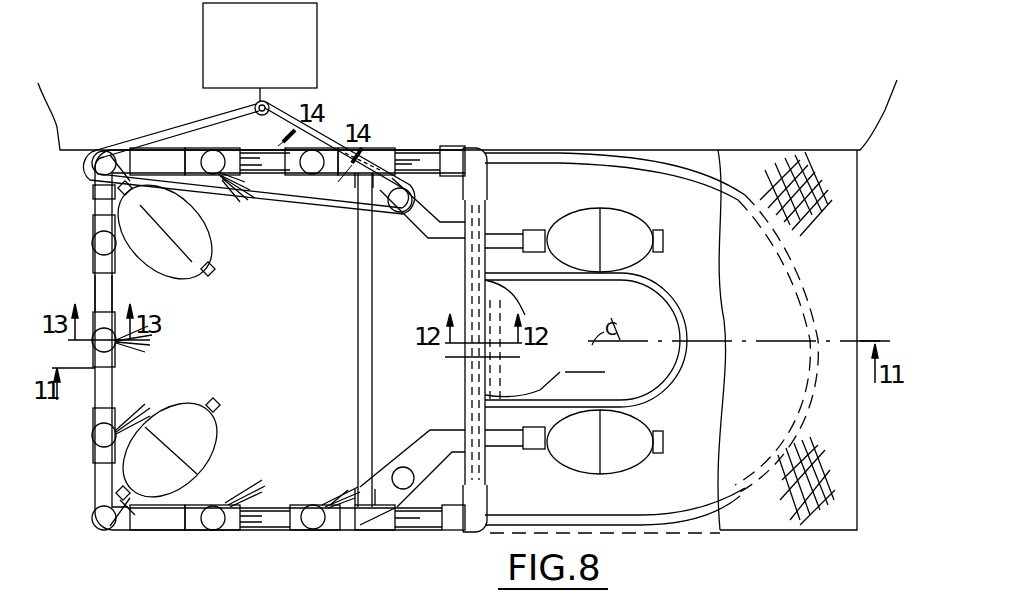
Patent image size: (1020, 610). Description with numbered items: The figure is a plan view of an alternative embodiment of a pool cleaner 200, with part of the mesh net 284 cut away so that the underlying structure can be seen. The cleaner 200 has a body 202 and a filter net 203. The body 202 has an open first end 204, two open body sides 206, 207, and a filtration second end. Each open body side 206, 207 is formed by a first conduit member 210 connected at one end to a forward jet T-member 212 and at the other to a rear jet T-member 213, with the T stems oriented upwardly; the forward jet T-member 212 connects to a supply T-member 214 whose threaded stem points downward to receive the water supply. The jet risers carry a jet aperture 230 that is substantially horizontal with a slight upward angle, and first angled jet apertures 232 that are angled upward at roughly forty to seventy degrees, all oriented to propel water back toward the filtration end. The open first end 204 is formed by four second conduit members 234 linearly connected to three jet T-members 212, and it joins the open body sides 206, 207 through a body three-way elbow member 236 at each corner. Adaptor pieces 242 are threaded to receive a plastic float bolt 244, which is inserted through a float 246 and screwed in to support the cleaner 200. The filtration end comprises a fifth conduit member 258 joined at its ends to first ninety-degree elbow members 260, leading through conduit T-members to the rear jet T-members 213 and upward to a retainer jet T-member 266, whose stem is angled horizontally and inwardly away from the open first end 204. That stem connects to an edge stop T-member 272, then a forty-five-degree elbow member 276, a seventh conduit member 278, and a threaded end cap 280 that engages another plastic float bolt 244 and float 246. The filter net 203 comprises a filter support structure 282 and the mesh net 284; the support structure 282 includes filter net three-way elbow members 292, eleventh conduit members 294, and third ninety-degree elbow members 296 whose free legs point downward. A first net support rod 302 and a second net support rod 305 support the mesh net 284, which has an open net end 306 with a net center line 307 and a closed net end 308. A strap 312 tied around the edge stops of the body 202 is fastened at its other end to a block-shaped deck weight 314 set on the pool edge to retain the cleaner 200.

The pool cleaner 200 is at (654, 44).
The body 202 is at (135, 561).
The filter net 203 is at (779, 565).
The open first end 204 is at (96, 290).
The open body side 206 is at (170, 152).
The open body side 207 is at (328, 505).
The first conduit member 210 is at (247, 157).
The forward jet T-member 212 is at (188, 150).
The rear jet T-member 213 is at (325, 155).
The supply T-member 214 is at (160, 522).
The jet aperture 230 is at (224, 178).
The first angled jet apertures 232 is at (333, 500).
The second conduit members 234 is at (96, 195).
The body three-way elbow member 236 is at (93, 180).
The adaptor pieces 242 is at (133, 522).
The plastic float bolt 244 is at (657, 230).
The float 246 is at (617, 217).
The fifth conduit member 258 is at (358, 300).
The first 90° elbow members 260 is at (347, 192).
The retainer jet T-member 266 is at (352, 526).
The edge stop T-member 272 is at (399, 529).
The 45° elbow member 276 is at (445, 240).
The seventh conduit member 278 is at (504, 232).
The threaded end cap 280 is at (544, 228).
The filter support structure 282 is at (492, 200).
The mesh net 284 is at (797, 158).
The filter net three-way elbow members 292 is at (450, 150).
The eleventh conduit members 294 is at (401, 156).
The third 90° elbow members 296 is at (382, 152).
The first net support rod 302 is at (688, 518).
The second net support rod 305 is at (655, 292).
The open net end 306 is at (464, 378).
The net center line 307 is at (463, 337).
The closed net end 308 is at (858, 212).
The strap 312 is at (212, 118).
The deck weight 314 is at (318, 38).